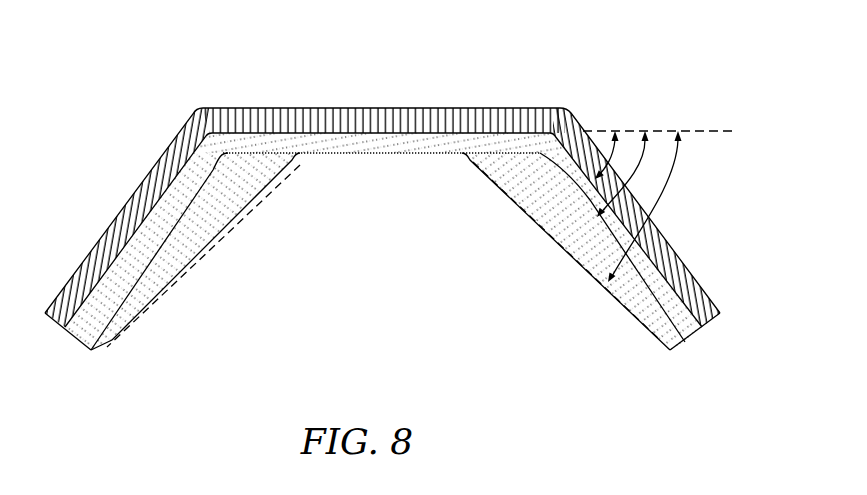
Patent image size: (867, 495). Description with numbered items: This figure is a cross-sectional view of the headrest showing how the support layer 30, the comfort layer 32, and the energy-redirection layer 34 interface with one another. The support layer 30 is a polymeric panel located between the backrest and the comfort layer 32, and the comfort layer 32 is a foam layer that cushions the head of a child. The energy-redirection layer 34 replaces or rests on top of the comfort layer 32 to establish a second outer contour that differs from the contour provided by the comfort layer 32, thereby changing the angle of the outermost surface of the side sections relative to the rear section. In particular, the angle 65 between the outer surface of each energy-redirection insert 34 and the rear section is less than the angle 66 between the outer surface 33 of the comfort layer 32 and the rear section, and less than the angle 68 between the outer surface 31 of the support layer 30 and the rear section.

The support layer 30 is at (381, 113).
The energy-redirection layer 34 is at (228, 193).
The comfort layer 32 is at (133, 253).
The outer surface of the support layer 31 is at (540, 225).
The outer surface of the comfort layer 33 is at (640, 293).
The angle 65 is at (675, 193).
The angle 66 is at (650, 158).
The angle 68 is at (618, 148).